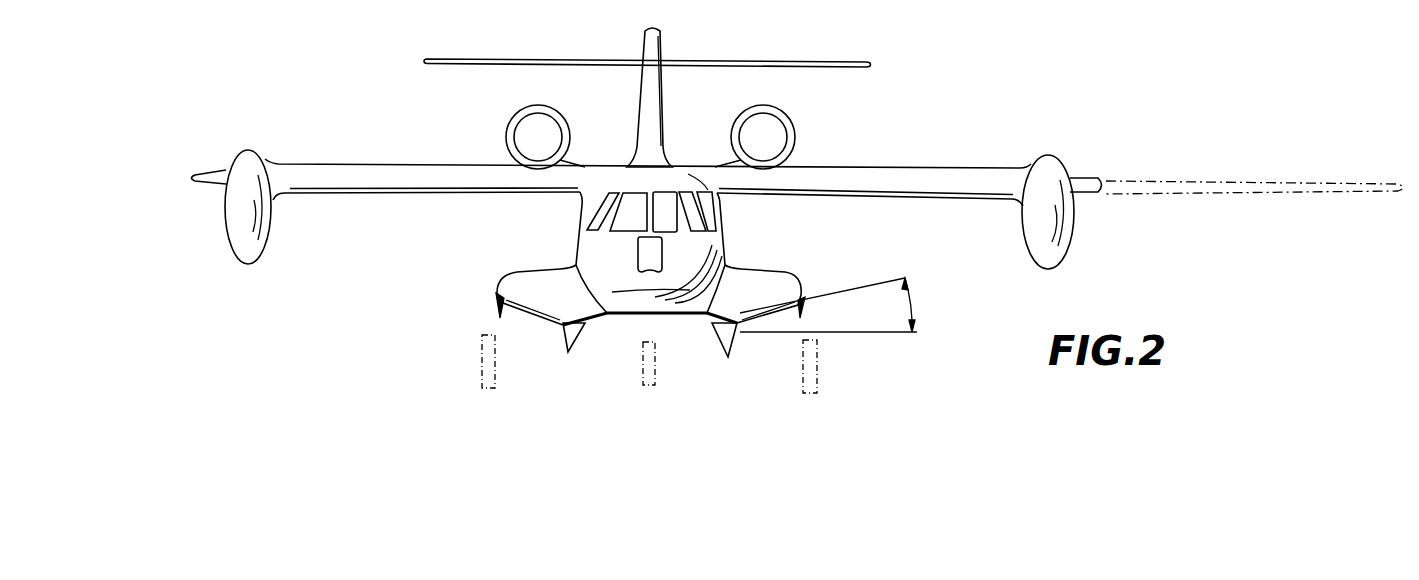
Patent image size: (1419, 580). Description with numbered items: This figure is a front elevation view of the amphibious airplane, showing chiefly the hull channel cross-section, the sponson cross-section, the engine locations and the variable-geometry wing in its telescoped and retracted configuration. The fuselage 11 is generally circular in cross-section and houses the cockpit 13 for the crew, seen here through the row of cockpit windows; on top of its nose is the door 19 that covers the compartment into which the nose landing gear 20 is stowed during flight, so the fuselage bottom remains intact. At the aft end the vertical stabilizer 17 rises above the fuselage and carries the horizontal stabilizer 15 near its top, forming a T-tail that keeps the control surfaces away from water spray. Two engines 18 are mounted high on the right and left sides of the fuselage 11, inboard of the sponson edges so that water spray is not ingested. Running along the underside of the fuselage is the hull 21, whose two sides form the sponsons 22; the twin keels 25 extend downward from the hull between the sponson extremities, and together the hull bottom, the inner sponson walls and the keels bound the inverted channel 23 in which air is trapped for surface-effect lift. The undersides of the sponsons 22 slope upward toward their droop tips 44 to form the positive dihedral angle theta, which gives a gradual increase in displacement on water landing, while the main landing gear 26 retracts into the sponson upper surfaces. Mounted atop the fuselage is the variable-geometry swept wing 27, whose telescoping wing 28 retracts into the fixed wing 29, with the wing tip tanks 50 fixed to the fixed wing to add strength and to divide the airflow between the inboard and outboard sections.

The fuselage 11 is at (703, 250).
The cockpit 13 is at (674, 225).
The horizontal stabilizer 15 is at (730, 58).
The vertical stabilizer 17 is at (655, 97).
The engines 18 is at (510, 120).
The nose gear door 19 is at (647, 255).
The nose landing gear 20 is at (655, 368).
The fuselage hull 21 is at (638, 307).
The sponsons 22 is at (520, 277).
The inverted channel 23 is at (688, 340).
The twin keels 25 is at (567, 350).
The main landing gear 26 is at (482, 378).
The variable-geometry swept wing 27 is at (367, 160).
The telescoping wing 28 is at (192, 178).
The fixed wing 29 is at (347, 195).
The droop tip 44 is at (808, 310).
The wing tip tanks 50 is at (1062, 218).